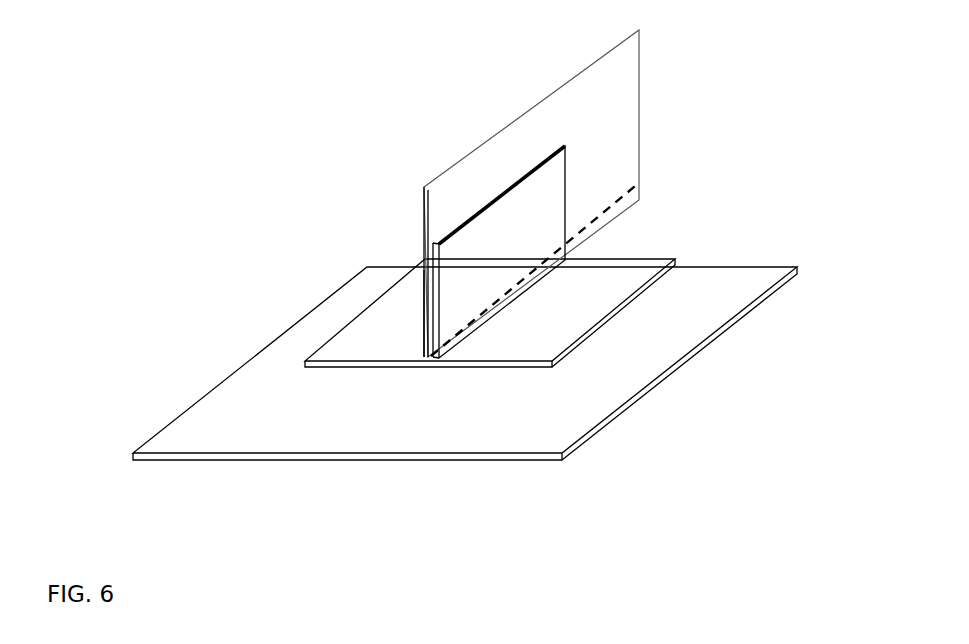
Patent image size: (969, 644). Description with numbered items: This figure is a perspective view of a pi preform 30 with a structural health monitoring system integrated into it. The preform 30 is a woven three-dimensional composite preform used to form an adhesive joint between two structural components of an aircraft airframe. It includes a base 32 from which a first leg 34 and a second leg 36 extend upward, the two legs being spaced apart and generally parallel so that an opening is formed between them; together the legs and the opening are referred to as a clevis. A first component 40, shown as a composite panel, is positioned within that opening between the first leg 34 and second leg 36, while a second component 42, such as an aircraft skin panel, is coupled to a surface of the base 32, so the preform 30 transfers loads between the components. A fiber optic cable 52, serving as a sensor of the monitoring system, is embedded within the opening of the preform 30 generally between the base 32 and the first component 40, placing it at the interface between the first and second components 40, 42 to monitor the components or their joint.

The preform 30 is at (420, 284).
The base 32 is at (565, 315).
The first leg 34 is at (420, 307).
The second leg 36 is at (537, 228).
The first component 40 is at (487, 173).
The second component 42 is at (403, 430).
The fiber optic cable 52 is at (622, 198).